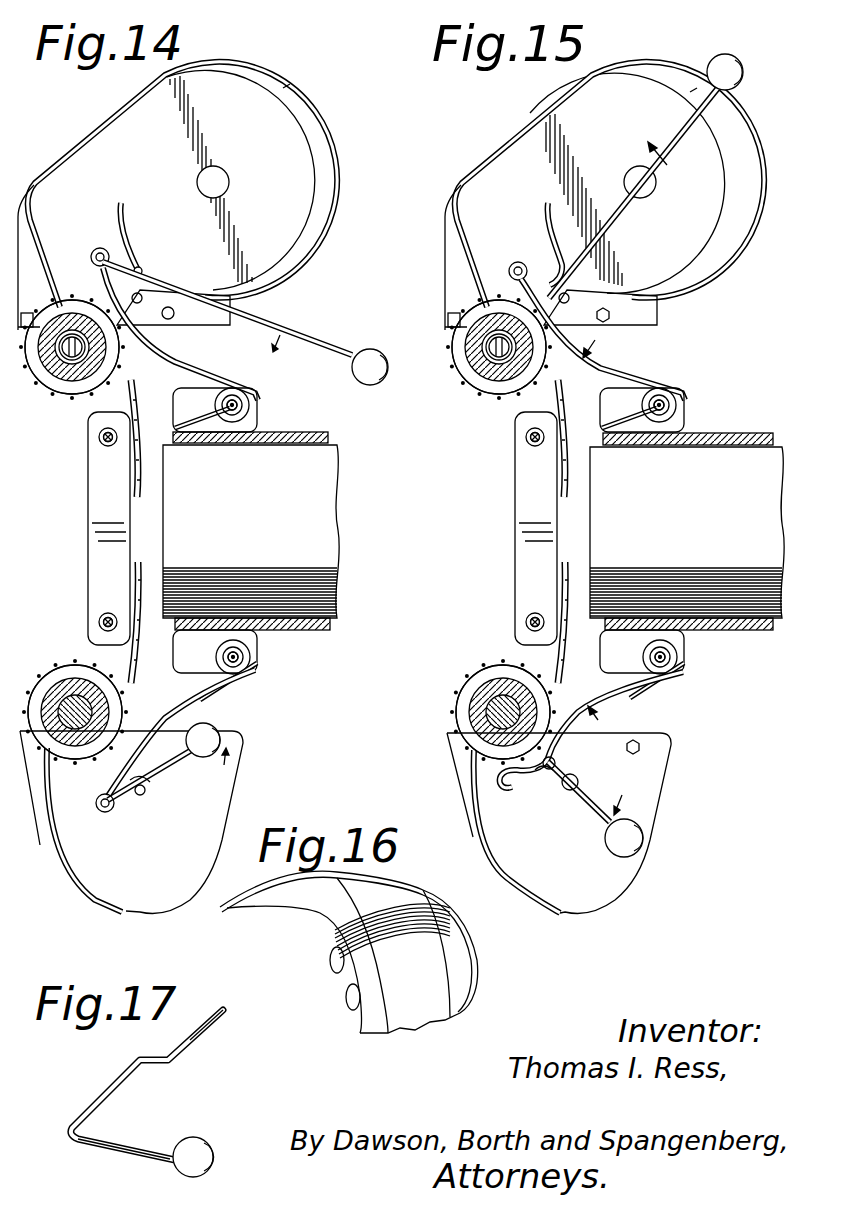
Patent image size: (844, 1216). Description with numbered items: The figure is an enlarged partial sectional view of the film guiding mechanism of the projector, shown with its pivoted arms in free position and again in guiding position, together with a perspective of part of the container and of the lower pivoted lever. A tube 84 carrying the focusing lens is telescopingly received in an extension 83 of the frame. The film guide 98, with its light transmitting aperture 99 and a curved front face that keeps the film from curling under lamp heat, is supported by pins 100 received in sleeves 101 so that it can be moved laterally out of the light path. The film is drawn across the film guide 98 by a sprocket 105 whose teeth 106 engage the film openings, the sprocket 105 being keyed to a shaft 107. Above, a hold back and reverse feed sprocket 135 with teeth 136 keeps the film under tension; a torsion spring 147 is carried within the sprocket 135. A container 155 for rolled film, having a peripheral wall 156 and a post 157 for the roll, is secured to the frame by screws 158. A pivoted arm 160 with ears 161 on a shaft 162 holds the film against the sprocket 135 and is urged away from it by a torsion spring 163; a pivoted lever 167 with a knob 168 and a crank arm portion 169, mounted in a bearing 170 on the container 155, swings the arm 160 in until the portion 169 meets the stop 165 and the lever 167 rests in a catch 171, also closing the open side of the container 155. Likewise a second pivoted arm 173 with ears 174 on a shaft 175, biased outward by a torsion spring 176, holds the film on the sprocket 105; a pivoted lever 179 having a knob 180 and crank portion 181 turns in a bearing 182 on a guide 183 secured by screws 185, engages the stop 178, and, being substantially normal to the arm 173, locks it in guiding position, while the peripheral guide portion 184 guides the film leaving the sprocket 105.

In FIG. 14, the extension 83 is at (320, 647).
In FIG. 15, the extension 83 is at (748, 432).
In FIG. 14, the tube 84 is at (325, 490).
In FIG. 15, the tube 84 is at (765, 478).
In FIG. 14, the film guide 98 is at (90, 484).
In FIG. 15, the film guide 98 is at (520, 467).
In FIG. 14, the light transmitting aperture 99 is at (135, 498).
In FIG. 15, the light transmitting aperture 99 is at (563, 498).
In FIG. 14, the pins 100 is at (98, 622).
In FIG. 15, the pins 100 is at (532, 618).
In FIG. 14, the sleeves 101 is at (104, 616).
In FIG. 15, the sleeves 101 is at (524, 623).
In FIG. 14, the sprocket 105 is at (80, 690).
In FIG. 15, the sprocket 105 is at (475, 696).
In FIG. 14, the teeth 106 is at (63, 668).
In FIG. 15, the teeth 106 is at (470, 670).
In FIG. 14, the shaft 107 is at (90, 706).
In FIG. 15, the shaft 107 is at (490, 714).
In FIG. 14, the hold back and reverse feed sprocket 135 is at (66, 372).
In FIG. 15, the hold back and reverse feed sprocket 135 is at (470, 360).
In FIG. 14, the teeth 136 is at (95, 380).
In FIG. 15, the teeth 136 is at (480, 385).
In FIG. 14, the torsion spring 147 is at (88, 352).
In FIG. 15, the torsion spring 147 is at (485, 347).
In FIG. 14, the container 155 is at (292, 162).
In FIG. 15, the container 155 is at (730, 160).
In FIG. 14, the peripheral wall 156 is at (318, 137).
In FIG. 15, the peripheral wall 156 is at (748, 137).
In FIG. 16, the peripheral wall 156 is at (428, 943).
In FIG. 14, the post 157 is at (222, 190).
In FIG. 15, the post 157 is at (655, 188).
In FIG. 14, the screws 158 is at (175, 313).
In FIG. 15, the screws 158 is at (603, 322).
In FIG. 14, the pivoted arm 160 is at (165, 356).
In FIG. 15, the pivoted arm 160 is at (605, 370).
In FIG. 14, the ears 161 is at (250, 400).
In FIG. 15, the ears 161 is at (677, 398).
In FIG. 14, the shaft 162 is at (245, 410).
In FIG. 15, the shaft 162 is at (672, 408).
In FIG. 14, the torsion spring 163 is at (180, 380).
In FIG. 15, the torsion spring 163 is at (628, 428).
In FIG. 14, the stop 165 is at (150, 301).
In FIG. 15, the stop 165 is at (567, 300).
In FIG. 14, the pivoted lever 167 is at (265, 330).
In FIG. 15, the pivoted lever 167 is at (620, 225).
In FIG. 14, the knob 168 is at (375, 352).
In FIG. 15, the knob 168 is at (745, 70).
In FIG. 14, the crank arm portion 169 is at (100, 250).
In FIG. 15, the crank arm portion 169 is at (545, 278).
In FIG. 14, the bearing 170 is at (132, 252).
In FIG. 15, the bearing 170 is at (555, 262).
In FIG. 14, the catch 171 is at (284, 88).
In FIG. 15, the catch 171 is at (692, 92).
In FIG. 16, the catch 171 is at (334, 974).
In FIG. 14, the second pivoted arm 173 is at (182, 708).
In FIG. 15, the second pivoted arm 173 is at (610, 698).
In FIG. 14, the ears 174 is at (258, 666).
In FIG. 15, the ears 174 is at (683, 667).
In FIG. 14, the shaft 175 is at (245, 657).
In FIG. 15, the shaft 175 is at (672, 655).
In FIG. 14, the torsion spring 176 is at (180, 652).
In FIG. 15, the torsion spring 176 is at (625, 675).
In FIG. 14, the stop 178 is at (142, 778).
In FIG. 15, the stop 178 is at (552, 758).
In FIG. 14, the pivoted lever 179 is at (172, 758).
In FIG. 15, the pivoted lever 179 is at (592, 822).
In FIG. 17, the pivoted lever 179 is at (120, 1147).
In FIG. 14, the knob 180 is at (218, 730).
In FIG. 15, the knob 180 is at (644, 838).
In FIG. 17, the knob 180 is at (192, 1145).
In FIG. 14, the crank portion 181 is at (112, 808).
In FIG. 15, the crank portion 181 is at (556, 764).
In FIG. 17, the crank portion 181 is at (112, 1077).
In FIG. 14, the bearing 182 is at (145, 793).
In FIG. 15, the bearing 182 is at (578, 782).
In FIG. 17, the bearing 182 is at (212, 1035).
In FIG. 14, the guide 183 is at (200, 818).
In FIG. 15, the guide 183 is at (655, 778).
In FIG. 14, the peripheral guide portion 184 is at (78, 896).
In FIG. 15, the peripheral guide portion 184 is at (480, 862).
In FIG. 15, the screws 185 is at (634, 740).